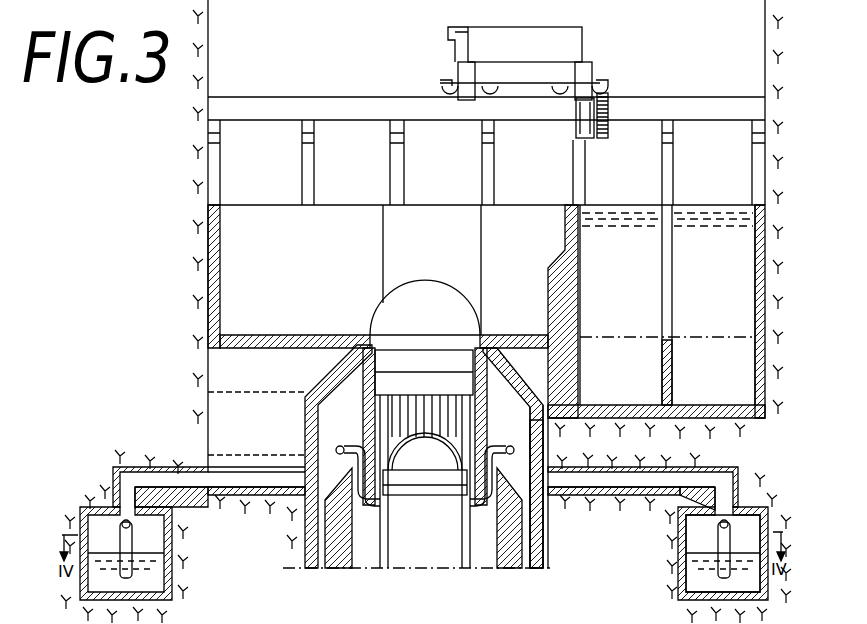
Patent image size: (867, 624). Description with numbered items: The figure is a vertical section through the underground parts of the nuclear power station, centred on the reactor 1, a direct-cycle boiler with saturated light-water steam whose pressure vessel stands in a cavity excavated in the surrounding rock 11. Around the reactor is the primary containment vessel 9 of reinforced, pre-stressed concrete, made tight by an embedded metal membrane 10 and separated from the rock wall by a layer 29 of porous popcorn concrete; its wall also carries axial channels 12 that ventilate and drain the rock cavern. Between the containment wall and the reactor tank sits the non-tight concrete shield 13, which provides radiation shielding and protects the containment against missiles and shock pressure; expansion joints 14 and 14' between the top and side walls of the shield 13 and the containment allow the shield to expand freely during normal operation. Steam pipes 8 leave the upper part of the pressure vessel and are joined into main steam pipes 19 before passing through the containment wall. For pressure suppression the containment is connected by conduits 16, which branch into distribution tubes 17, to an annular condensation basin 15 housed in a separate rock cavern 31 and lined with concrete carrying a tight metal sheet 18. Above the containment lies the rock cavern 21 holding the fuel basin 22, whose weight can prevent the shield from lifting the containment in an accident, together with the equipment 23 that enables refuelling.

The reactor 1 is at (424, 459).
The steam pipes 8 is at (491, 462).
The primary containment vessel 9 is at (541, 545).
The metal membrane 10 is at (537, 522).
The rock 11 is at (656, 330).
The axial channels 12 is at (548, 562).
The concrete shield 13 is at (504, 562).
The expansion joint 14 is at (424, 456).
The expansion joint 14' is at (291, 518).
The condensation basin 15 is at (703, 569).
The conduits 16 is at (654, 480).
The distribution tubes 17 is at (727, 545).
The tight metal sheet 18 is at (690, 600).
The main steam pipes 19 is at (514, 449).
The rock cavern 21 is at (486, 233).
The fuel basin 22 is at (722, 322).
The equipment 23 is at (528, 57).
The concrete layer 29 is at (538, 506).
The separate rock cavern 31 is at (700, 535).